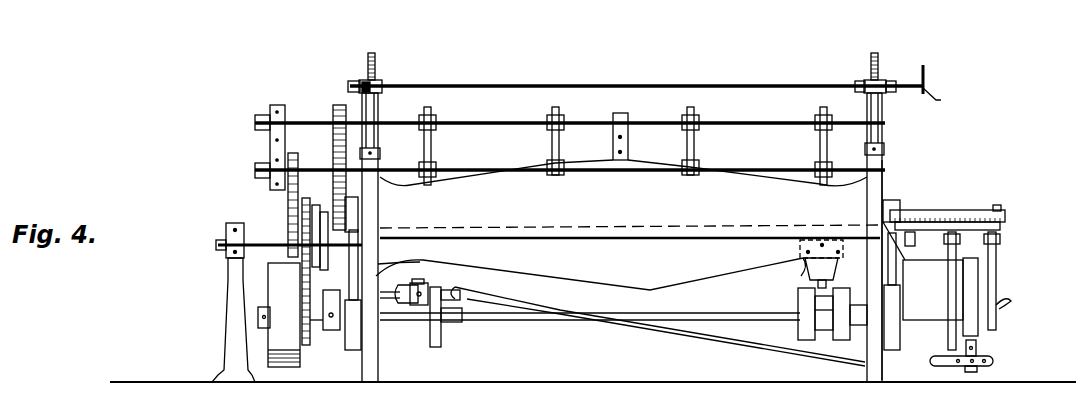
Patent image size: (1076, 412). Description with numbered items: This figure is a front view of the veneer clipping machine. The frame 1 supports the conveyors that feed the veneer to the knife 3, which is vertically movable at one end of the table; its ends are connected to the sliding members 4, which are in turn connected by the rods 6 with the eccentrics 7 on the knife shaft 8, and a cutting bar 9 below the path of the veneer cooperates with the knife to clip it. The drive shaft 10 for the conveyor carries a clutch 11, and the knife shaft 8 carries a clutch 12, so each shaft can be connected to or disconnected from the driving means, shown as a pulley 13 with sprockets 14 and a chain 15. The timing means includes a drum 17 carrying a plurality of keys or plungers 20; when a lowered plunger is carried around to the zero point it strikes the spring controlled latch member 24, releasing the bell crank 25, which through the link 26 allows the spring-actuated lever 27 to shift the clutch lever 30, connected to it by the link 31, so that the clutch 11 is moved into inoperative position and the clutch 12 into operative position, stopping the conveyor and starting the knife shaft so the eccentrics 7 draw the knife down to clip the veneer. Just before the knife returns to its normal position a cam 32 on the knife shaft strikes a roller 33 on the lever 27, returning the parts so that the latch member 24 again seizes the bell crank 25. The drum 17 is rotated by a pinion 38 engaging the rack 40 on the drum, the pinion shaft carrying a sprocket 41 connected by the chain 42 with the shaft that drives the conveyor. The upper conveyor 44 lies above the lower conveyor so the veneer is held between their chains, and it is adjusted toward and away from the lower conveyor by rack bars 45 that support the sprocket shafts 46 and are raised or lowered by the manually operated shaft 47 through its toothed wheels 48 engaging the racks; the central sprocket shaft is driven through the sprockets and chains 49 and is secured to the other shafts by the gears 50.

The frame 1 is at (622, 246).
The knife 3 is at (614, 233).
The sliding members 4 is at (884, 178).
The rods 6 is at (353, 263).
The eccentrics 7 is at (353, 352).
The knife shaft 8 is at (603, 324).
The cutting bar 9 is at (674, 275).
The drive shaft 10 is at (222, 245).
The clutch 11 is at (345, 243).
The clutch 12 is at (333, 332).
The pulley 13 is at (285, 362).
The sprockets 14 is at (306, 212).
The chain 15 is at (305, 266).
The drum 17 is at (1006, 214).
The keys or plungers 20 is at (997, 205).
The latch member 24 is at (998, 290).
The bell crank 25 is at (985, 352).
The link 26 is at (748, 340).
The lever 27 is at (425, 284).
The clutch lever 30 is at (330, 278).
The link 31 is at (389, 299).
The cam 32 is at (432, 320).
The roller 33 is at (432, 286).
The pinion 38 is at (930, 232).
The rack 40 is at (1002, 228).
The sprocket 41 is at (906, 214).
The chain 42 is at (900, 240).
The upper conveyor 44 is at (432, 140).
The rack bars 45 is at (373, 57).
The sprocket shafts 46 is at (487, 168).
The manually operated shaft 47 is at (776, 84).
The toothed wheels 48 is at (374, 85).
The sprockets and chains 49 is at (290, 193).
The gears 50 is at (298, 167).